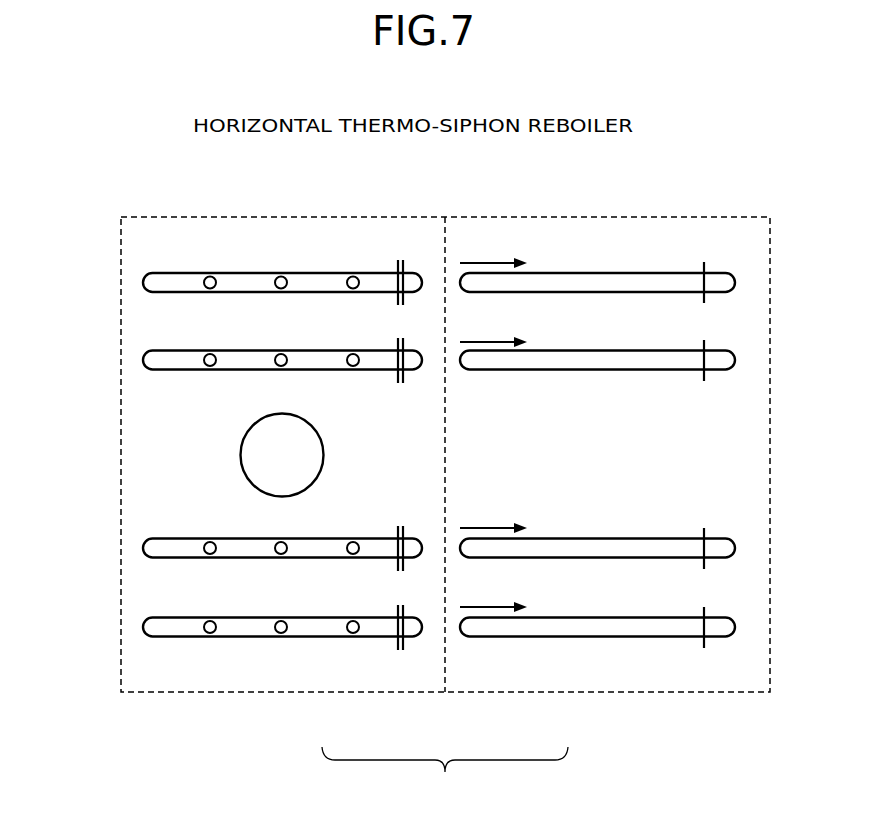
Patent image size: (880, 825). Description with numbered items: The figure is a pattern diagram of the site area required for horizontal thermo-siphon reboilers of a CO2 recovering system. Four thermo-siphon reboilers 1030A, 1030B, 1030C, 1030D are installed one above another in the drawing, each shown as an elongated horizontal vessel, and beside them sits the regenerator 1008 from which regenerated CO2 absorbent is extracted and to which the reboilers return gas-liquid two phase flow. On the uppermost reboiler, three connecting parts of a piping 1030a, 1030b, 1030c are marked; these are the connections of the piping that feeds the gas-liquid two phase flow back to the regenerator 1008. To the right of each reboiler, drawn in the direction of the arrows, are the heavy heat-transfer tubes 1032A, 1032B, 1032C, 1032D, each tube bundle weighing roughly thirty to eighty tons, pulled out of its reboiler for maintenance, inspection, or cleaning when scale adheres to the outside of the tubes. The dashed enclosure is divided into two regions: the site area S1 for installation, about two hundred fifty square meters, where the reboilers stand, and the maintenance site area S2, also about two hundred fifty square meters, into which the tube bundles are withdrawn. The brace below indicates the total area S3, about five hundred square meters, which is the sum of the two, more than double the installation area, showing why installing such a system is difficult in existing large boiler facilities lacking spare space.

The thermo-siphon reboiler 1030A is at (181, 273).
The connecting part of a piping 1030a is at (210, 272).
The connecting part of a piping 1030b is at (282, 272).
The connecting part of a piping 1030c is at (354, 272).
The thermo-siphon reboiler 1030B is at (143, 360).
The thermo-siphon reboiler 1030C is at (143, 548).
The thermo-siphon reboiler 1030D is at (143, 627).
The regenerator 1008 is at (240, 455).
The heat-transfer tube 1032A is at (573, 280).
The heat-transfer tube 1032B is at (693, 357).
The heat-transfer tube 1032C is at (693, 548).
The heat-transfer tube 1032D is at (693, 627).
The site area for installation S1 is at (337, 692).
The maintenance site area S2 is at (545, 692).
The total area S3 is at (445, 776).